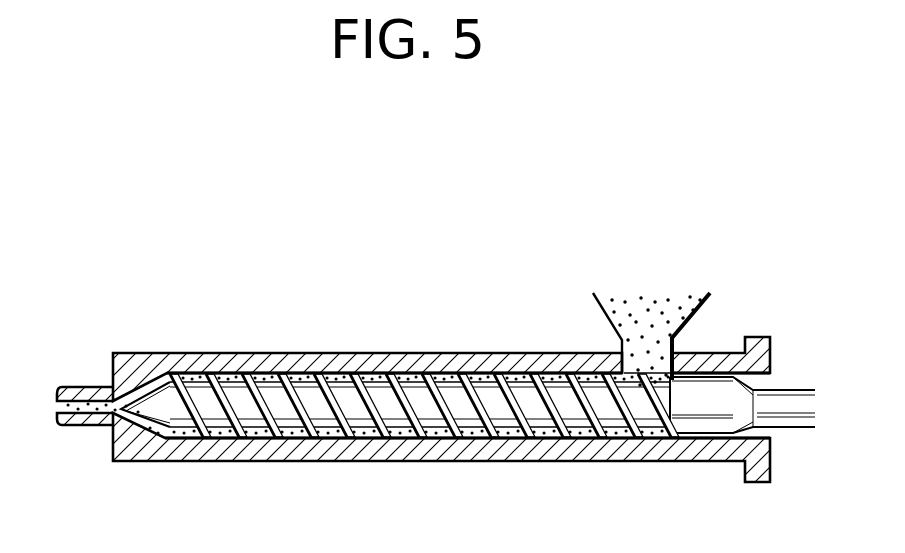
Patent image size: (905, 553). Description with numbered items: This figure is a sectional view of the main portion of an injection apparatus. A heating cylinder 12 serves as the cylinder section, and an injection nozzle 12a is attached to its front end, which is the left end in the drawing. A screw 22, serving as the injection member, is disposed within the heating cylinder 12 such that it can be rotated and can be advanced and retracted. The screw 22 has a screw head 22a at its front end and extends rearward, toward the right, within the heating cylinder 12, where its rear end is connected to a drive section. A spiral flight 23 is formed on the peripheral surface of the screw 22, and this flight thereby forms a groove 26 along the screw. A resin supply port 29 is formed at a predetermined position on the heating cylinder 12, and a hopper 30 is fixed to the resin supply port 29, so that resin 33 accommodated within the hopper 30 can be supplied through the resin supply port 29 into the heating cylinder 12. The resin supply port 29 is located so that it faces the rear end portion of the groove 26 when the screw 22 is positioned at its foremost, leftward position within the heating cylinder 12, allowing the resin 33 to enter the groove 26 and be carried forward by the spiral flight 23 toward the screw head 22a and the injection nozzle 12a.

The heating cylinder 12 is at (207, 354).
The injection nozzle 12a is at (77, 386).
The screw 22 is at (310, 399).
The screw head 22a is at (152, 397).
The spiral flight 23 is at (512, 374).
The groove 26 is at (398, 373).
The resin supply port 29 is at (673, 355).
The hopper 30 is at (699, 313).
The resin 33 is at (650, 307).